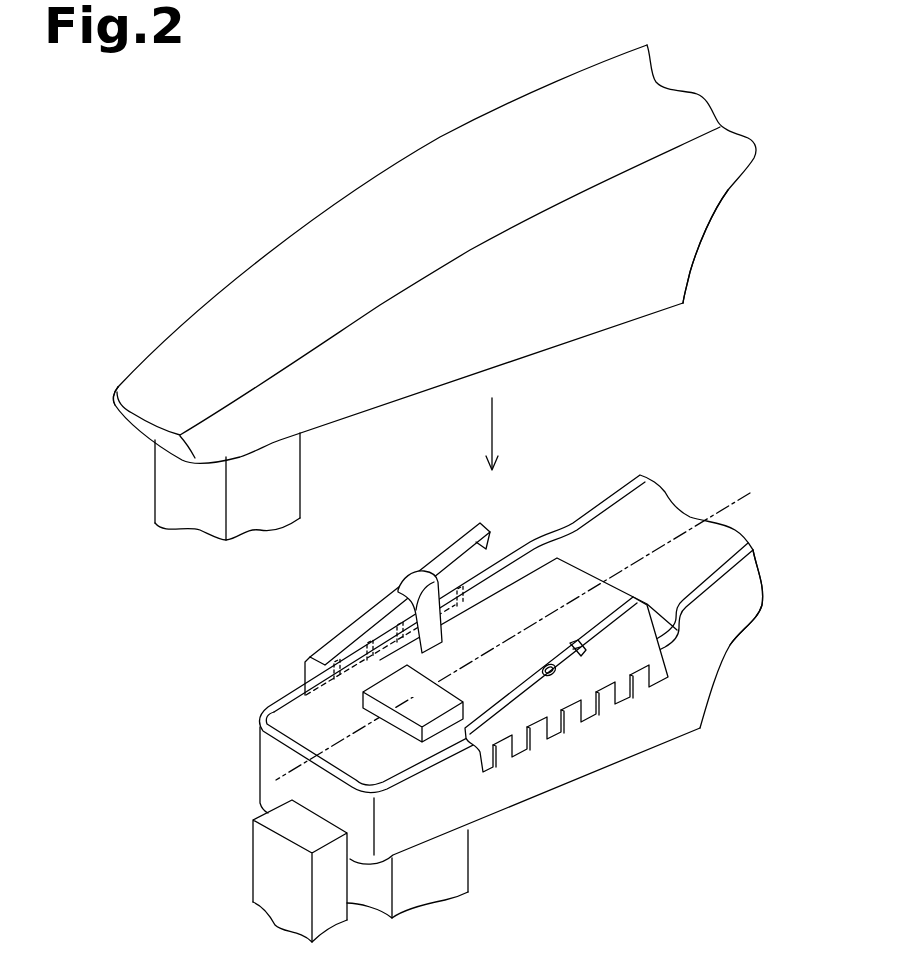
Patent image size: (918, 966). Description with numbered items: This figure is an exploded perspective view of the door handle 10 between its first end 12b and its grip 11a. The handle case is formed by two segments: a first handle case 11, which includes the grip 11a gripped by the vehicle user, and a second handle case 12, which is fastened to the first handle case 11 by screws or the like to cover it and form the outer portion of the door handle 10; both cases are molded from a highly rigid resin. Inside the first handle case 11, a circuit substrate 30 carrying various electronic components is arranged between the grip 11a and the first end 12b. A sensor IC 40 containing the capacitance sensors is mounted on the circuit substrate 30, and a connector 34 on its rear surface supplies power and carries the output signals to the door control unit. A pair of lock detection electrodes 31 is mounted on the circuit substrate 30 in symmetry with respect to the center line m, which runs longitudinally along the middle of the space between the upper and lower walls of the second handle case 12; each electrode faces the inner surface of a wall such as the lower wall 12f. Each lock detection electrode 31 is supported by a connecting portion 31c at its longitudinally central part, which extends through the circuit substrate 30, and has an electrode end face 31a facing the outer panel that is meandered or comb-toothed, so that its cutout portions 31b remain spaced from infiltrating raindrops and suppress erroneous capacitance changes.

The door handle 10 is at (252, 567).
The second handle case 12 is at (475, 116).
The first end 12b is at (188, 293).
The lower wall 12f is at (673, 254).
The first handle case 11 is at (629, 758).
The grip 11a is at (751, 636).
The center line m is at (527, 628).
The circuit substrate 30 is at (582, 571).
The lock detection electrode 31 is at (480, 766).
The electrode end face 31a is at (627, 697).
The cutout portion 31b is at (578, 706).
The connecting portion 31c is at (415, 584).
The connector 34 is at (468, 862).
The sensor IC 40 is at (425, 668).